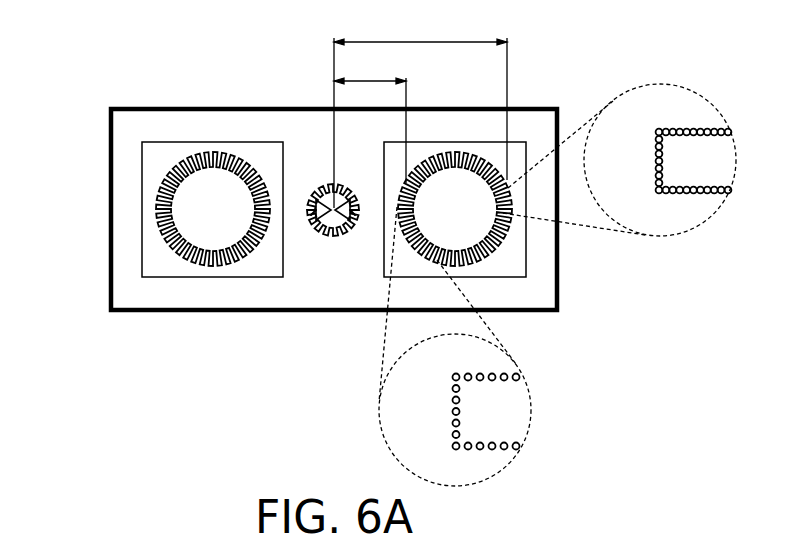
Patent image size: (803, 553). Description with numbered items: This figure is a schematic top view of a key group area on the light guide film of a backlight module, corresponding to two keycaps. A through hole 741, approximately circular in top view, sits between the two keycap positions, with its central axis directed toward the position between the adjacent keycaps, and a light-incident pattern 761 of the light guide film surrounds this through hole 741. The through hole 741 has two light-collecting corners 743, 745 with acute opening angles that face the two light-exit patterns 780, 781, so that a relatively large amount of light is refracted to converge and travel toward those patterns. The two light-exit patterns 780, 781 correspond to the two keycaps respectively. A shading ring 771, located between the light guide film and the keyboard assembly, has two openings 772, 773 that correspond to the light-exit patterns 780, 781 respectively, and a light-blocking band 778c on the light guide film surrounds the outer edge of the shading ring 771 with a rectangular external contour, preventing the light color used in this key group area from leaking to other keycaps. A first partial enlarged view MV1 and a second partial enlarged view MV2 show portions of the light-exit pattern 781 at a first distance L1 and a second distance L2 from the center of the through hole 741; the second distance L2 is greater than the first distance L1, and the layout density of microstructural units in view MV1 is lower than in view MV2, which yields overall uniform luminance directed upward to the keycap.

The light-blocking band 778c is at (133, 108).
The shading ring 771 is at (133, 132).
The opening 772 is at (143, 214).
The opening 773 is at (510, 278).
The light-exit pattern 780 is at (165, 180).
The light-exit pattern 781 is at (503, 240).
The light-incident pattern 761 is at (324, 186).
The through hole 741 is at (333, 223).
The light-collecting corner 743 is at (317, 215).
The light-collecting corner 745 is at (350, 218).
The first distance L1 is at (420, 123).
The second distance L2 is at (420, 30).
The first partial enlarged view MV1 is at (528, 388).
The second partial enlarged view MV2 is at (622, 94).